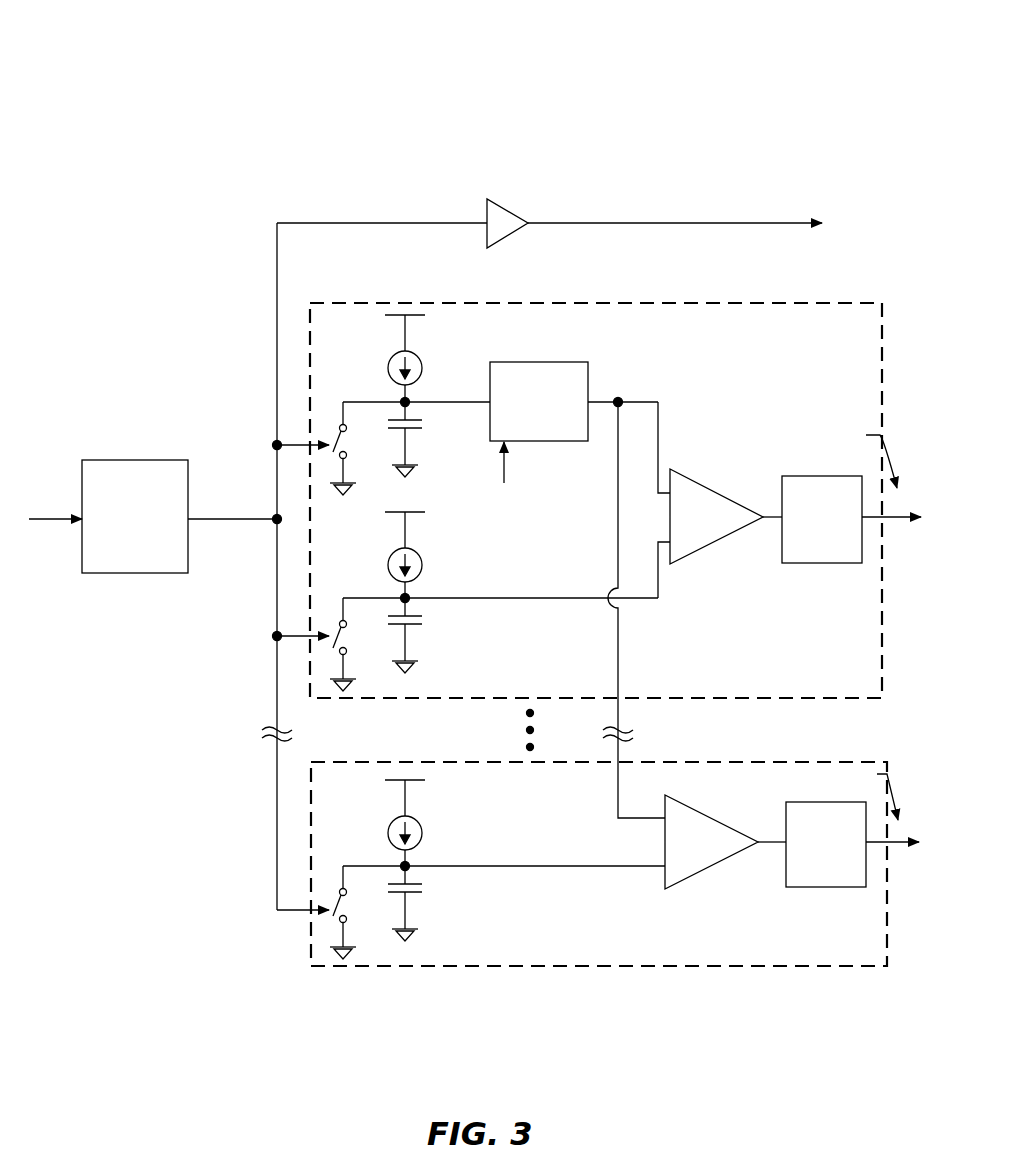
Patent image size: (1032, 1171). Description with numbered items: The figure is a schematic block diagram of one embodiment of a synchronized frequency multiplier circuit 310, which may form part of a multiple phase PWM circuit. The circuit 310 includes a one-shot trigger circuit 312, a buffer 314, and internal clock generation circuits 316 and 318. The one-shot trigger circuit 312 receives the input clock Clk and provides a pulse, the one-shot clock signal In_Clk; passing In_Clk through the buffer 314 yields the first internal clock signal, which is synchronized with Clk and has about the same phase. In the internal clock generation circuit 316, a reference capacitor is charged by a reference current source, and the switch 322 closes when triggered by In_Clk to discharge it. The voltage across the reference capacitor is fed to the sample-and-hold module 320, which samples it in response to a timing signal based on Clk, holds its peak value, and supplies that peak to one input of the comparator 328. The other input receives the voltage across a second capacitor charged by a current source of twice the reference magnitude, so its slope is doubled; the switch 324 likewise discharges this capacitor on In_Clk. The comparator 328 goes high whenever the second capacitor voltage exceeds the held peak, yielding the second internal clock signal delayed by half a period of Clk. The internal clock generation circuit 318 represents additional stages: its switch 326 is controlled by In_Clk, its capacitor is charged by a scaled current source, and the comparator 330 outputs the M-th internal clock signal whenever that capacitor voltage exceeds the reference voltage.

The synchronized frequency multiplier circuit 310 is at (719, 85).
The one-shot trigger circuit 312 is at (188, 573).
The buffer 314 is at (508, 237).
The internal clock generation circuit 316 is at (822, 698).
The internal clock generation circuit 318 is at (785, 967).
The sample-and-hold module 320 is at (540, 441).
The switch 322 is at (329, 433).
The switch 324 is at (329, 656).
The switch 326 is at (328, 886).
The comparator 328 is at (700, 548).
The comparator 330 is at (700, 875).